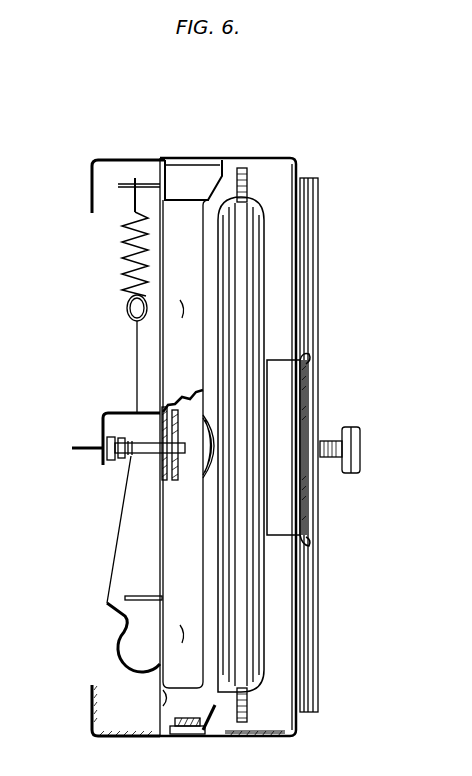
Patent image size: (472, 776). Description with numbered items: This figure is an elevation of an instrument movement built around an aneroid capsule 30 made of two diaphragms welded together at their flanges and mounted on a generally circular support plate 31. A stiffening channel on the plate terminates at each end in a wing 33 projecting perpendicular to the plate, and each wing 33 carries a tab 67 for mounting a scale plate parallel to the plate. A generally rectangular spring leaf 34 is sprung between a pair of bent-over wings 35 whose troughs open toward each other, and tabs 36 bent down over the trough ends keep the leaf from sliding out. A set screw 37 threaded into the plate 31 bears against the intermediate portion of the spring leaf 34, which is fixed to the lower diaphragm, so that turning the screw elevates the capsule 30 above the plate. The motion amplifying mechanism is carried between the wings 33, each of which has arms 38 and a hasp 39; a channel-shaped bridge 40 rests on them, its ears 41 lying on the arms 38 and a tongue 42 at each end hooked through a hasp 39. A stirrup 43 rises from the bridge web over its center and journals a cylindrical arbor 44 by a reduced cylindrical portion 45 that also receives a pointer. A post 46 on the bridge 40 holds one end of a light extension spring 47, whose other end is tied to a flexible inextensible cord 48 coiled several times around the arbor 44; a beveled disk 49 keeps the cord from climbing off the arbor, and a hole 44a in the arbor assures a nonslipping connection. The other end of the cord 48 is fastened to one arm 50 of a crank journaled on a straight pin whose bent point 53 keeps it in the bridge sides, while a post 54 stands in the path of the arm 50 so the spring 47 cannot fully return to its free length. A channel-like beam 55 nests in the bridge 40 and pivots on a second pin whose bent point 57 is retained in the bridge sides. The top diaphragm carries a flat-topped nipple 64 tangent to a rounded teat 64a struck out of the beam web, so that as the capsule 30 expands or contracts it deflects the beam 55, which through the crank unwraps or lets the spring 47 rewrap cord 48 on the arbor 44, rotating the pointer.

The capsule 30 is at (284, 600).
The support plate 31 is at (320, 600).
The wing 33 is at (286, 157).
The spring leaf 34 is at (276, 456).
The wing 35 is at (306, 400).
The tab 36 is at (308, 356).
The set screw 37 is at (360, 452).
The arm 38 is at (190, 178).
The hasp 39 is at (180, 720).
The bridge 40 is at (170, 544).
The ear 41 is at (162, 699).
The tongue 42 is at (232, 170).
The stirrup 43 is at (102, 414).
The arbor 44 is at (152, 455).
The hole 44a is at (122, 460).
The reduced cylindrical portion 45 is at (80, 450).
The post 46 is at (124, 182).
The extension spring 47 is at (122, 266).
The cord 48 is at (135, 374).
The beveled disk 49 is at (111, 461).
The arm 50 is at (128, 628).
The bent point 53 is at (182, 625).
The post 54 is at (138, 596).
The beam 55 is at (195, 397).
The bent point 57 is at (182, 300).
The nipple 64 is at (210, 446).
The teat 64a is at (170, 478).
The tab 67 is at (91, 185).